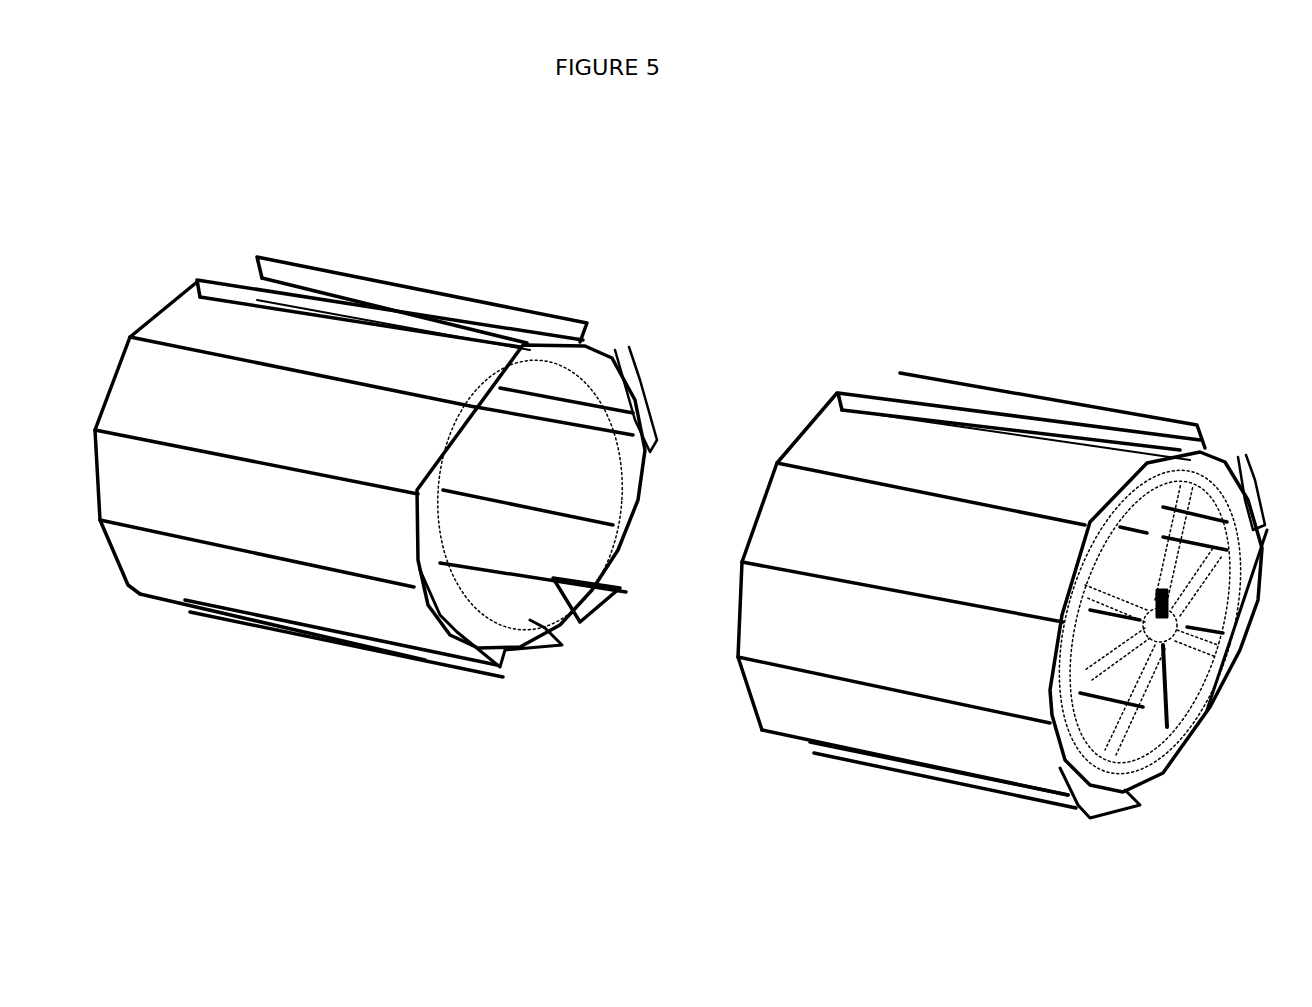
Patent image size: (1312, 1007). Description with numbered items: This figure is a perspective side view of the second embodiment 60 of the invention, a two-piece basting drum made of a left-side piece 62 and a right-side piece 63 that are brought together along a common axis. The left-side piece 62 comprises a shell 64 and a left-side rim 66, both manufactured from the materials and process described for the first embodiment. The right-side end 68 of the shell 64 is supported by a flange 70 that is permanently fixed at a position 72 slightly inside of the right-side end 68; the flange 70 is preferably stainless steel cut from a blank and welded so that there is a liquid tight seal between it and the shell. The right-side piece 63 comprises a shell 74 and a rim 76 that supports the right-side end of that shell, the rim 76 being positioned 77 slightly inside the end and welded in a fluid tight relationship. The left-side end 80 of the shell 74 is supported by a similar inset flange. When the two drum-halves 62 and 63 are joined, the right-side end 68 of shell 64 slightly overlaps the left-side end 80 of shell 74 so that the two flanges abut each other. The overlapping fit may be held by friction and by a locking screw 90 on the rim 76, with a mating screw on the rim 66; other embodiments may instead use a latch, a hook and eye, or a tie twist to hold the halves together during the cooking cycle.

The second embodiment 60 is at (833, 217).
The left-side piece 62 is at (310, 663).
The right-side piece 63 is at (422, 300).
The shell 64 is at (250, 335).
The left-side rim 66 is at (132, 318).
The right-side end 68 is at (540, 648).
The flange 70 is at (595, 352).
The position slightly inside the right-side end 72 is at (553, 580).
The shell 74 is at (892, 632).
The rim 76 is at (745, 700).
The position slightly inside the right-side end 77 is at (1175, 728).
The left-side end 80 is at (875, 388).
The locking screw 90 is at (1163, 600).